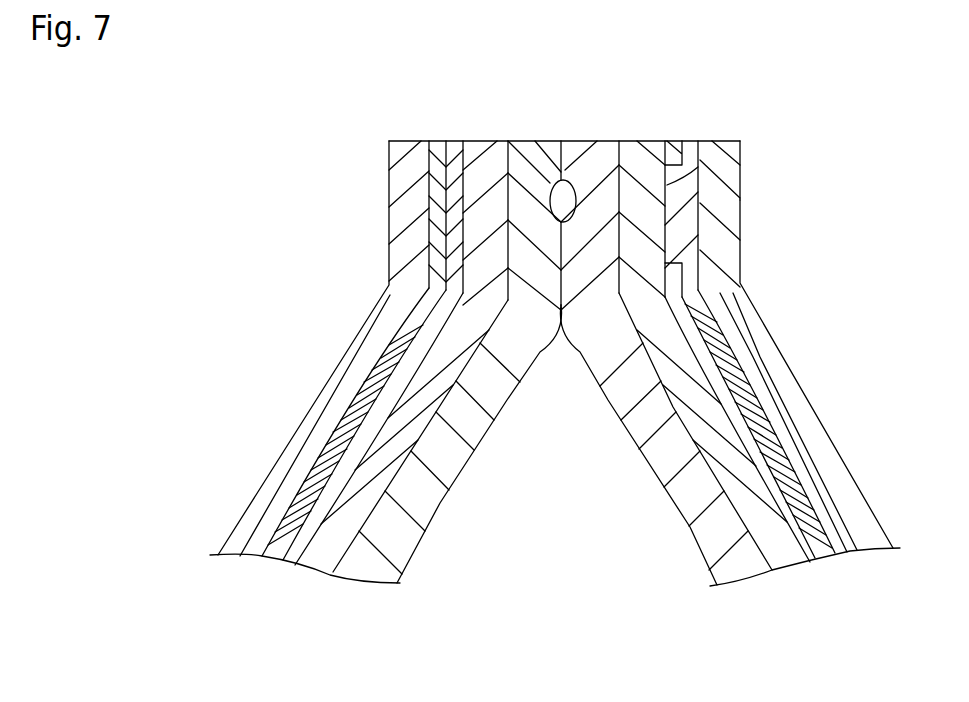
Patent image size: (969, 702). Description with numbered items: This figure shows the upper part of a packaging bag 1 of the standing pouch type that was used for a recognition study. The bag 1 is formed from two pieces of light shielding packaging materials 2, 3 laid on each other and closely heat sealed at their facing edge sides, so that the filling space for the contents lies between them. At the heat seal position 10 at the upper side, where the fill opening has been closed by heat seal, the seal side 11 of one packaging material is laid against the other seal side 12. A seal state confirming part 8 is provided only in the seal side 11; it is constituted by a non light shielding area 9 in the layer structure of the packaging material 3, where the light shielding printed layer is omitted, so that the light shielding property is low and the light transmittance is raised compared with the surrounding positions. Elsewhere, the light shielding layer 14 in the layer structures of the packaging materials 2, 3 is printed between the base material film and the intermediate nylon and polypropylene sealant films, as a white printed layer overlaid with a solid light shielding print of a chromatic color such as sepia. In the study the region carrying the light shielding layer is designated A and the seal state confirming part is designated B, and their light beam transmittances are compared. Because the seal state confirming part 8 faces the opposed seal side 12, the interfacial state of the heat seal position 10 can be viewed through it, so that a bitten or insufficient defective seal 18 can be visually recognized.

The packaging bag 1 is at (300, 241).
The packaging material 2 is at (275, 427).
The packaging material 3 is at (855, 430).
The seal state confirming part 8 is at (740, 220).
The non light shielding area 9 is at (712, 141).
The heat seal position 10 is at (389, 188).
The seal side 11 is at (742, 147).
The other seal side 12 is at (388, 153).
The light shielding layer 14 is at (381, 363).
The defective seal 18 is at (575, 182).
The light shielding layer A is at (451, 133).
The seal state confirming part B is at (706, 193).